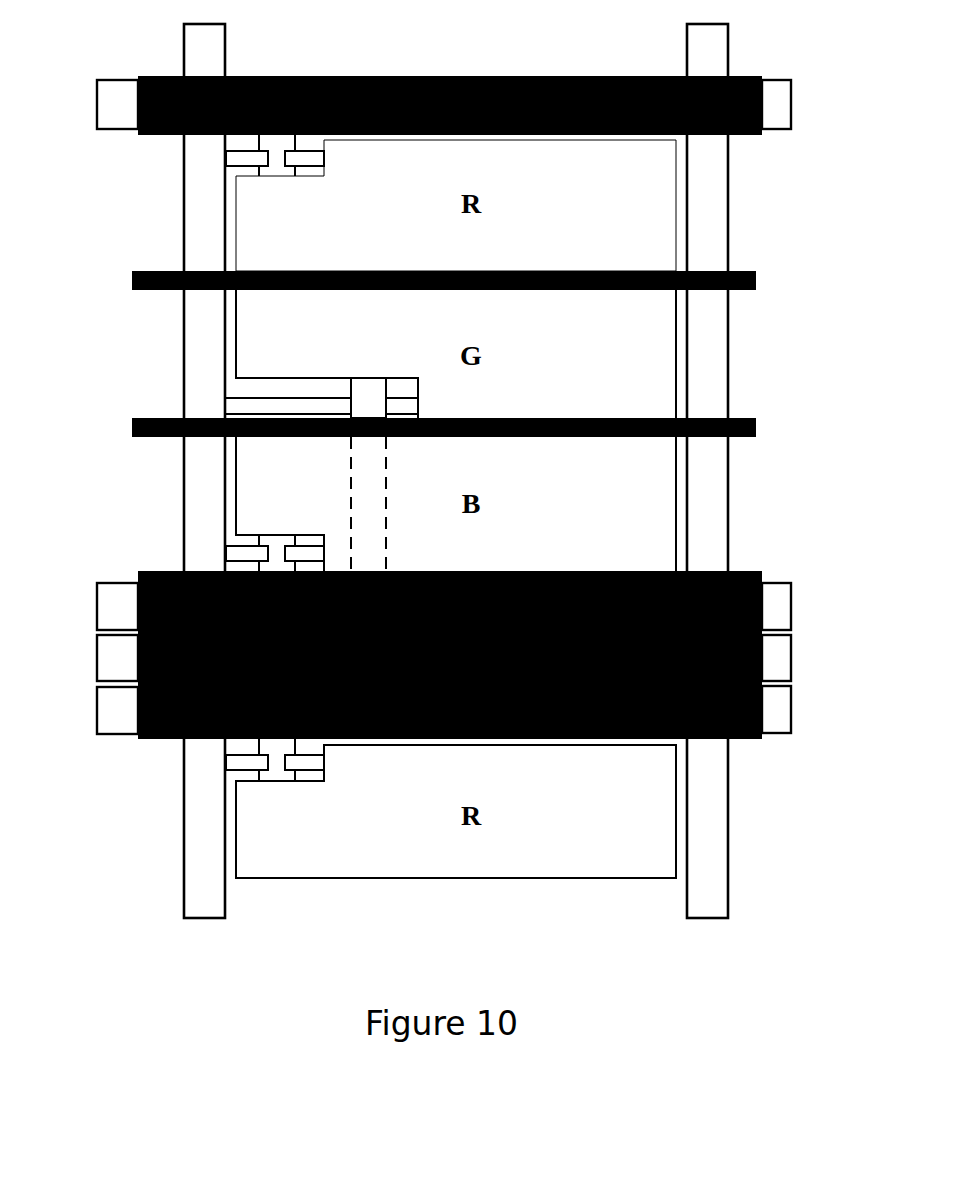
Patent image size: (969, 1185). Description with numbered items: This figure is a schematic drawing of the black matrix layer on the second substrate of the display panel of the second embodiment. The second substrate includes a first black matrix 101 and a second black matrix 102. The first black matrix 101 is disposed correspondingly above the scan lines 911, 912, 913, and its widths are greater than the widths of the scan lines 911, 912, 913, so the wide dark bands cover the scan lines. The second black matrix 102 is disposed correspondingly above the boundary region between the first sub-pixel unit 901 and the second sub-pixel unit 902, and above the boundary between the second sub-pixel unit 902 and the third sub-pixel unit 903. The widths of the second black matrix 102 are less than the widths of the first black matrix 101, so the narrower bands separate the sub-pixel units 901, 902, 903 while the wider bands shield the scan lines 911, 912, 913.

The first black matrix 101 is at (150, 68).
The second black matrix 102 is at (124, 275).
The first sub-pixel unit 901 is at (676, 183).
The second sub-pixel unit 902 is at (676, 333).
The third sub-pixel unit 903 is at (676, 483).
The scan line 911 is at (772, 97).
The scan line 912 is at (772, 600).
The scan line 913 is at (772, 652).